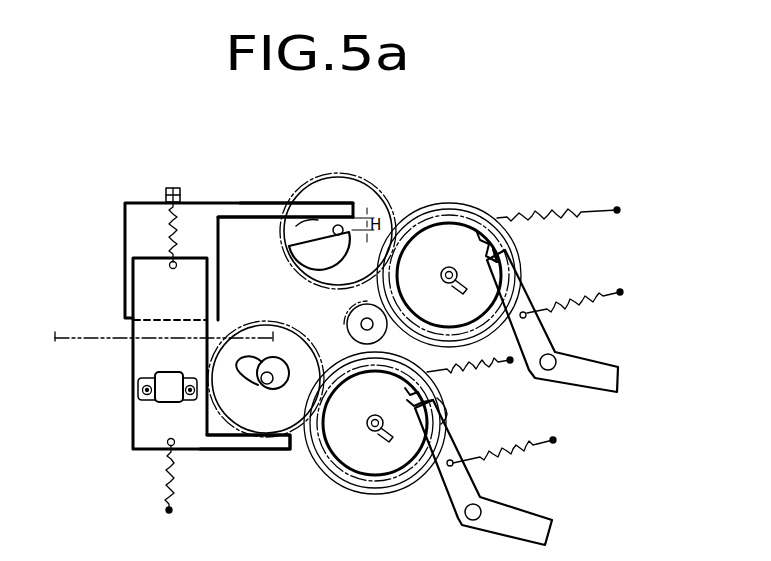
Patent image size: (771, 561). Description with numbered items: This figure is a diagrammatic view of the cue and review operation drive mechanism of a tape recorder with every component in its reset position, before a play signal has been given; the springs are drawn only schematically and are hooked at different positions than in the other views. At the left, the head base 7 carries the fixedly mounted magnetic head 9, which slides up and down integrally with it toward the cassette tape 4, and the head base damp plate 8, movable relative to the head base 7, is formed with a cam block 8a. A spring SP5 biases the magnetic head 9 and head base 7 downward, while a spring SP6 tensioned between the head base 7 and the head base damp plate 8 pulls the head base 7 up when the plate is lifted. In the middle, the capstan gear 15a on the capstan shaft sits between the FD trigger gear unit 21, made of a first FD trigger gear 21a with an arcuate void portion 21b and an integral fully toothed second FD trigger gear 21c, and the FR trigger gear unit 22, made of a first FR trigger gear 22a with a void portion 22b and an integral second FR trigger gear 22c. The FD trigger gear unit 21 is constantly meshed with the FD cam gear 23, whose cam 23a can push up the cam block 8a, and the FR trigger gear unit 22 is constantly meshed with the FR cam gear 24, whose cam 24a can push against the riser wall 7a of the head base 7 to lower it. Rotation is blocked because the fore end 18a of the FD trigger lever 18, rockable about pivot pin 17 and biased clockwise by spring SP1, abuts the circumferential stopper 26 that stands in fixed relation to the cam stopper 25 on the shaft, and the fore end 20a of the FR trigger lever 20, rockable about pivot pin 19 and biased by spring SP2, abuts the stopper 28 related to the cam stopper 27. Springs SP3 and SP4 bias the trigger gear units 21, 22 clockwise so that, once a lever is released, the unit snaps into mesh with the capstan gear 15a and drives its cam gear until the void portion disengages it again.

The cassette tape 4 is at (110, 330).
The head base 7 is at (141, 355).
The riser wall 7a is at (245, 449).
The head base damp plate 8 is at (125, 205).
The cam block 8a is at (268, 203).
The magnetic head 9 is at (138, 381).
The capstan gear 15a is at (347, 325).
The pivot pin 17 is at (555, 351).
The FD trigger lever 18 is at (597, 367).
The fore end 18a is at (498, 262).
The pivot pin 19 is at (472, 525).
The FR trigger lever 20 is at (515, 530).
The fore end 20a is at (405, 400).
The FD trigger gear unit 21 is at (478, 248).
The first FD trigger gear 21a is at (480, 206).
The void portion 21b is at (413, 337).
The second FD trigger gear 21c is at (447, 212).
The FR trigger gear unit 22 is at (392, 442).
The first FR trigger gear 22a is at (380, 496).
The void portion 22b is at (450, 412).
The second FR trigger gear 22c is at (340, 472).
The FD cam gear 23 is at (350, 175).
The cam 23a is at (305, 250).
The FR cam gear 24 is at (252, 325).
The cam 24a is at (257, 373).
The cam stopper 25 is at (505, 284).
The stopper 26 is at (490, 244).
The cam stopper 27 is at (383, 438).
The stopper 28 is at (443, 403).
The spring SP1 is at (597, 284).
The spring SP2 is at (510, 457).
The spring SP3 is at (557, 211).
The spring SP4 is at (478, 373).
The spring SP5 is at (168, 493).
The spring SP6 is at (166, 232).